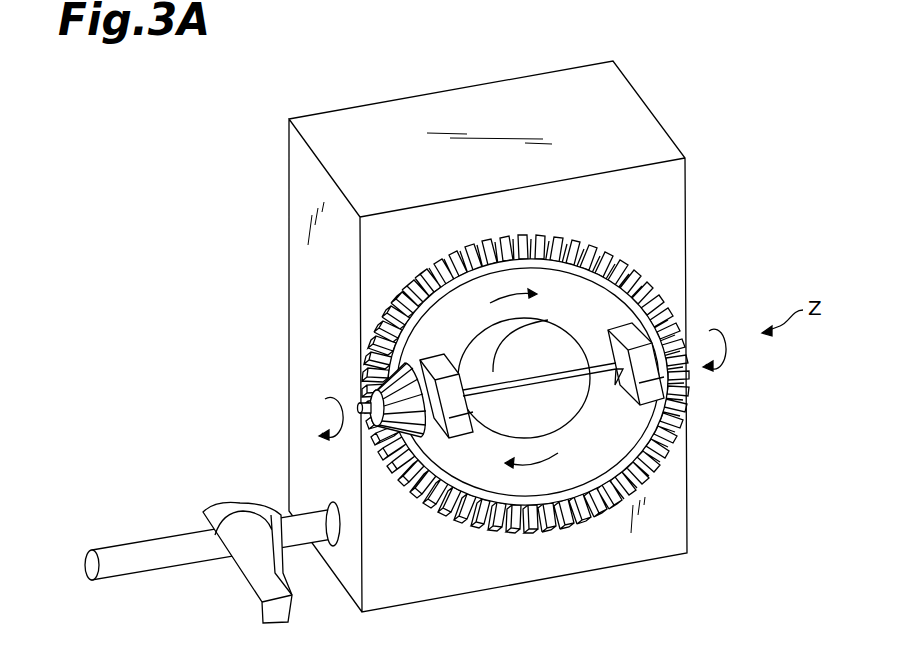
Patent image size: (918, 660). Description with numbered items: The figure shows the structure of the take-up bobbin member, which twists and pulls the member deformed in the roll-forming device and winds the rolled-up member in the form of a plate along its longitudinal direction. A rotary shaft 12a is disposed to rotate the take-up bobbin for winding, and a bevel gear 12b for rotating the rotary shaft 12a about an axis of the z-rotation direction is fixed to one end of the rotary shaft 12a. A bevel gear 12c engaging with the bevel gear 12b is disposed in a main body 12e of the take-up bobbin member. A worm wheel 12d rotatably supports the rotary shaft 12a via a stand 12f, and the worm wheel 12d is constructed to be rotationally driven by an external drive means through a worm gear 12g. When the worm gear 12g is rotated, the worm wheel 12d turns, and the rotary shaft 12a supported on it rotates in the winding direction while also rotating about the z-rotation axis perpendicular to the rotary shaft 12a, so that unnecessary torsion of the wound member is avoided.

The rotary shaft 12a is at (580, 380).
The bevel gear 12b is at (365, 400).
The bevel gear 12c is at (590, 520).
The worm wheel 12d is at (605, 297).
The main body 12e is at (512, 86).
The stand 12f is at (462, 432).
The worm gear 12g is at (158, 568).